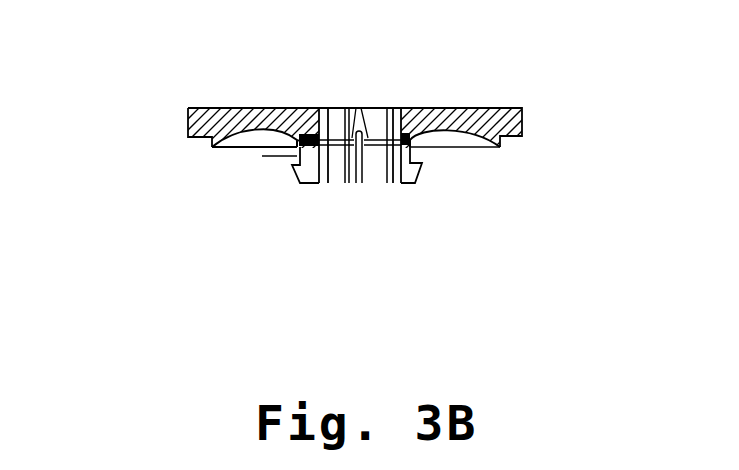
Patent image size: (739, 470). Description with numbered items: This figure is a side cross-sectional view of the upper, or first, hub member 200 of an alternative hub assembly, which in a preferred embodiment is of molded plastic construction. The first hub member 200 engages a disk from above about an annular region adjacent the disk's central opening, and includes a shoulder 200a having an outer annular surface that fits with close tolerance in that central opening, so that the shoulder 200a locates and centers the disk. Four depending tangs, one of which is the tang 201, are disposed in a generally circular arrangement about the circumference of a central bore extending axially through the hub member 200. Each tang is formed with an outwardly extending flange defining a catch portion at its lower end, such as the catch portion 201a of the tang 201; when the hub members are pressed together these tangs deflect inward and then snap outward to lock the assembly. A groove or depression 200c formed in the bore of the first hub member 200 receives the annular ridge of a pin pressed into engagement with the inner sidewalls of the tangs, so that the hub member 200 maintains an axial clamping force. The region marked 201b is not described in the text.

The first hub member 200 is at (124, 70).
The shoulder 200a is at (212, 147).
The groove or depression 200c is at (363, 107).
The tang 201 is at (262, 156).
The catch portion 201a is at (293, 165).
The tapered tip 201b is at (360, 107).